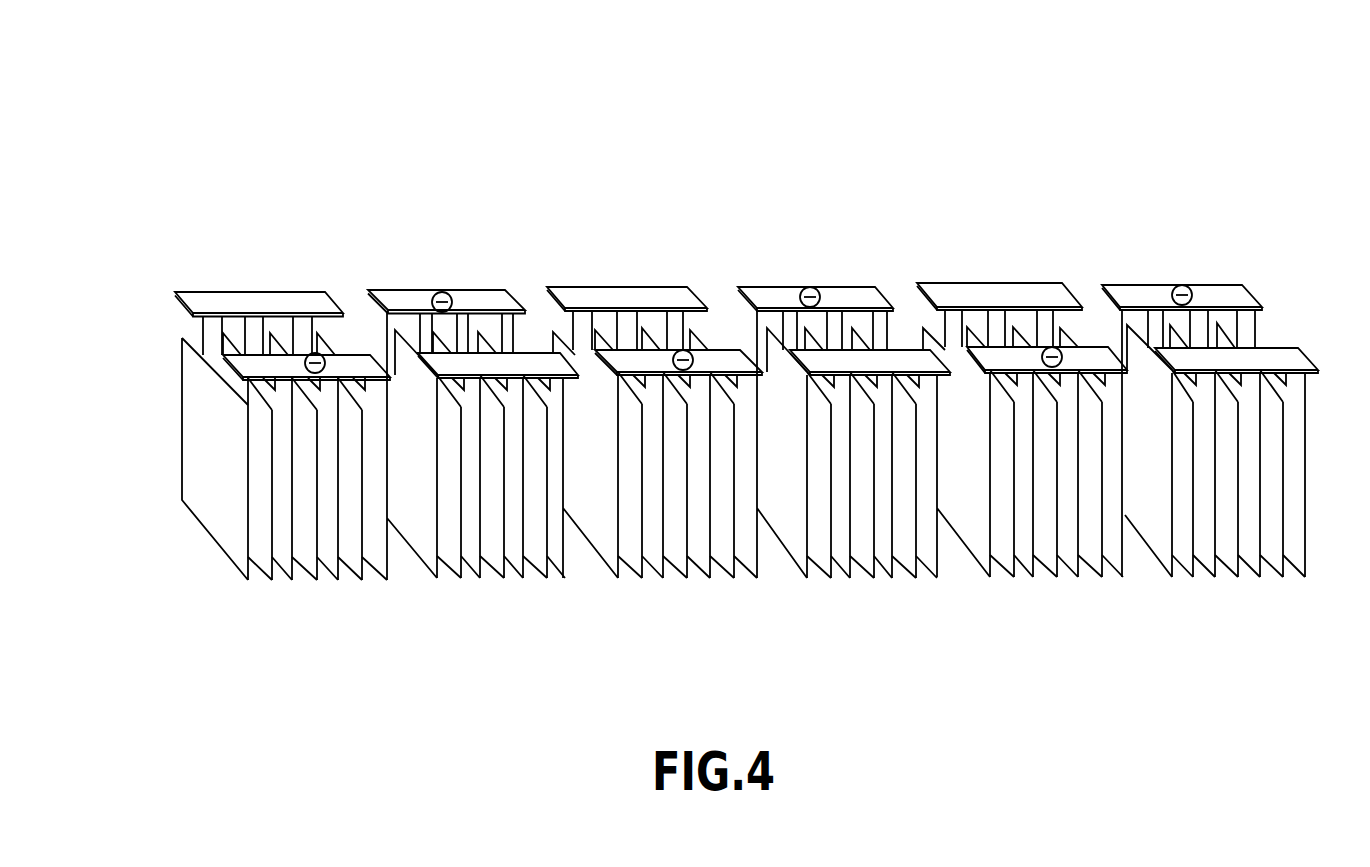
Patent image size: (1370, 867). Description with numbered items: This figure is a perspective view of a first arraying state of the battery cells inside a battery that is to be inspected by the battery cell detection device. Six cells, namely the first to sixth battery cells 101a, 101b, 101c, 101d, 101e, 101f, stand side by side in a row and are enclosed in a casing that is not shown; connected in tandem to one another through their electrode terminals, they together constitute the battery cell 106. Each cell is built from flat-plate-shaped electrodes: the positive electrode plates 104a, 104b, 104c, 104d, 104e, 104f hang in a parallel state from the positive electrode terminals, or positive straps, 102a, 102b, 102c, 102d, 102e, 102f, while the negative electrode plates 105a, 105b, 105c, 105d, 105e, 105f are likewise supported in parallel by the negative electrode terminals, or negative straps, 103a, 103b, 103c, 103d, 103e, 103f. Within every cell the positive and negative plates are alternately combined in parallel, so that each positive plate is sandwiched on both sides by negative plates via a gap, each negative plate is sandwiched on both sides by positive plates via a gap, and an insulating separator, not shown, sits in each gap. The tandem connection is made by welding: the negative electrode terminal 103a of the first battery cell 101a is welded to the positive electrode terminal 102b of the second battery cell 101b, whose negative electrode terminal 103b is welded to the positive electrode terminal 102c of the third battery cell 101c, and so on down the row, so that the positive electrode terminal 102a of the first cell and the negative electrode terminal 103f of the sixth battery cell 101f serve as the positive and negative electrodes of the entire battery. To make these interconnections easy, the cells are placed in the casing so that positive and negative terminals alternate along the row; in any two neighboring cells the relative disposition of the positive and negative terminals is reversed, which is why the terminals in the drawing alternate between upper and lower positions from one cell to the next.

The battery cell 106 is at (975, 102).
The first battery cell 101a is at (291, 242).
The second battery cell 101b is at (464, 241).
The third battery cell 101c is at (642, 238).
The fourth battery cell 101d is at (834, 236).
The fifth battery cell 101e is at (1011, 231).
The sixth battery cell 101f is at (1197, 232).
The positive electrode terminal 102a is at (203, 298).
The positive electrode terminal 102b is at (536, 362).
The positive electrode terminal 102c is at (594, 296).
The positive electrode terminal 102d is at (904, 360).
The positive electrode terminal 102e is at (950, 292).
The positive electrode terminal 102f is at (1288, 355).
The negative electrode terminal 103a is at (250, 367).
The negative electrode terminal 103b is at (398, 300).
The negative electrode terminal 103c is at (722, 360).
The negative electrode terminal 103d is at (779, 297).
The negative electrode terminal 103e is at (1094, 352).
The negative electrode terminal 103f is at (1138, 292).
The positive electrode plates 104a is at (267, 563).
The positive electrode plates 104b is at (453, 565).
The positive electrode plates 104c is at (637, 565).
The positive electrode plates 104d is at (828, 565).
The positive electrode plates 104e is at (1007, 562).
The positive electrode plates 104f is at (1190, 560).
The negative electrode plates 105a is at (218, 522).
The negative electrode plates 105b is at (425, 543).
The negative electrode plates 105c is at (610, 548).
The negative electrode plates 105d is at (795, 542).
The negative electrode plates 105e is at (977, 542).
The negative electrode plates 105f is at (1162, 540).